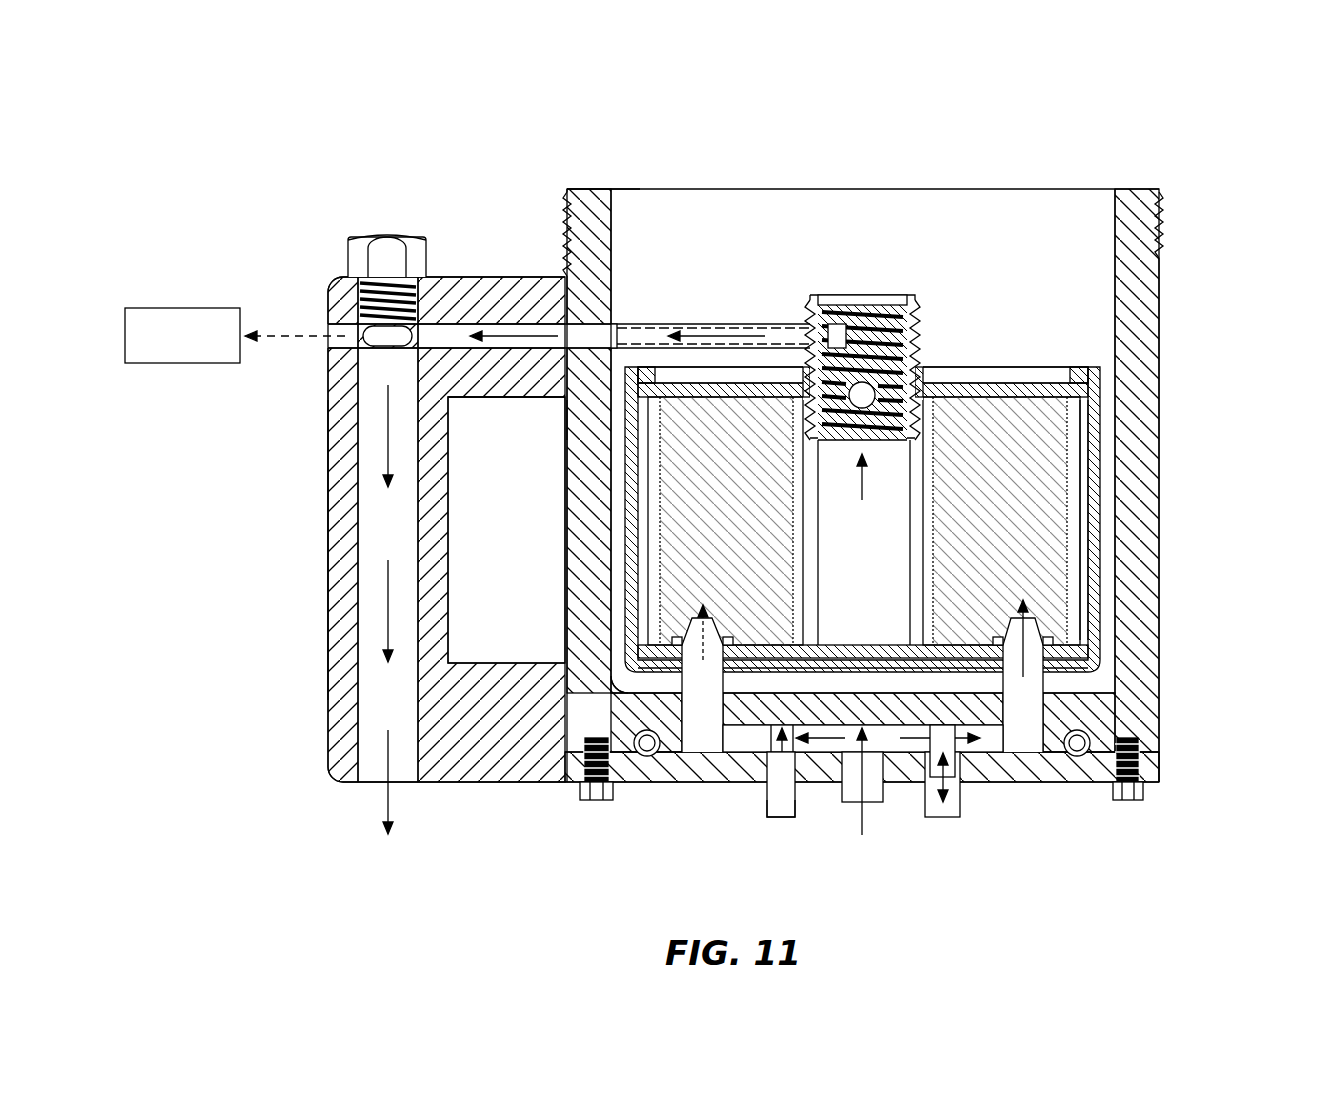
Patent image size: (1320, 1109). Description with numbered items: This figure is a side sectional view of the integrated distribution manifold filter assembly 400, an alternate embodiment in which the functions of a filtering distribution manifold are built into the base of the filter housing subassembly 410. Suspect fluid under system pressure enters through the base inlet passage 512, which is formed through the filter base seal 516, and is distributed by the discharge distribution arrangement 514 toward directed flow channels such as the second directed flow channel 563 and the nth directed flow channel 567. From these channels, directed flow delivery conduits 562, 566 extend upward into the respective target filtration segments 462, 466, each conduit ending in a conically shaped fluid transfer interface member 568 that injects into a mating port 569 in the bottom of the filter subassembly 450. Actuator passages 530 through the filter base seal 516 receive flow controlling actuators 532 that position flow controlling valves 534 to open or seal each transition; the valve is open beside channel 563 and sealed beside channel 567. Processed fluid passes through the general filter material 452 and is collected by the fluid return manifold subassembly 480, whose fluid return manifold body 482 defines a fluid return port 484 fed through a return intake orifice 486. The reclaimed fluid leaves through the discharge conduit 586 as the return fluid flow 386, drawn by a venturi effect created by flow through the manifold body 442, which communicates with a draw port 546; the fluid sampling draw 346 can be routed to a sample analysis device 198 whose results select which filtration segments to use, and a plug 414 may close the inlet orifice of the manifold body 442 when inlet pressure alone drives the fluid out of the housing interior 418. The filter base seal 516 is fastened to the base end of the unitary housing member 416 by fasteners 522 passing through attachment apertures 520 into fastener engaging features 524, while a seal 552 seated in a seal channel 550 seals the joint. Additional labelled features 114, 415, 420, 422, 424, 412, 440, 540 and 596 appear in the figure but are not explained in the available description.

The integrated distribution manifold filter assembly 400 is at (452, 170).
The housing top 114 is at (600, 189).
The housing interior 418 is at (1033, 203).
The housing threads 415 is at (1162, 240).
The plug 414 is at (388, 237).
The fluid sampling draw 346 is at (507, 336).
The sample analysis device 198 is at (183, 308).
The return fluid flow 386 is at (712, 336).
The discharge conduit 586 is at (786, 332).
The fluid return port 484 is at (869, 281).
The fluid return manifold subassembly 480 is at (908, 333).
The fluid return manifold body 482 is at (917, 332).
The plate 422 is at (932, 383).
The cover plate 420 is at (1002, 383).
The seal 424 is at (1092, 382).
The container 412 is at (1161, 412).
The filter subassembly 450 is at (1100, 504).
The general filter material 452 is at (1076, 556).
The target filtration segment 466 is at (745, 450).
The target filtration segment 462 is at (1025, 450).
The return intake orifice 486 is at (842, 440).
The manifold block 440 is at (293, 482).
The manifold body 442 is at (330, 558).
The drain passage 540 is at (346, 636).
The draw port 546 is at (548, 384).
The passage 596 is at (600, 428).
The directed flow channel 567 is at (692, 622).
The mating port 569 is at (672, 641).
The directed flow delivery conduit 566 is at (684, 688).
The fluid transfer interface member 568 is at (1040, 630).
The directed flow delivery conduit 562 is at (1055, 686).
The unitary housing member 416 is at (1103, 746).
The attachment aperture 520 is at (1140, 772).
The fastener 522 is at (1127, 801).
The filter base seal 516 is at (1094, 783).
The filter housing subassembly 410 is at (1177, 800).
The fastener engaging feature 524 is at (568, 748).
The seal channel 550 is at (612, 795).
The seal 552 is at (644, 757).
The flow controlling valve 534 is at (766, 734).
The actuator passage 530 is at (770, 792).
The flow controlling actuator 532 is at (770, 812).
The discharge distribution arrangement 514 is at (903, 746).
The base inlet passage 512 is at (844, 792).
The directed flow channel 563 is at (1008, 744).